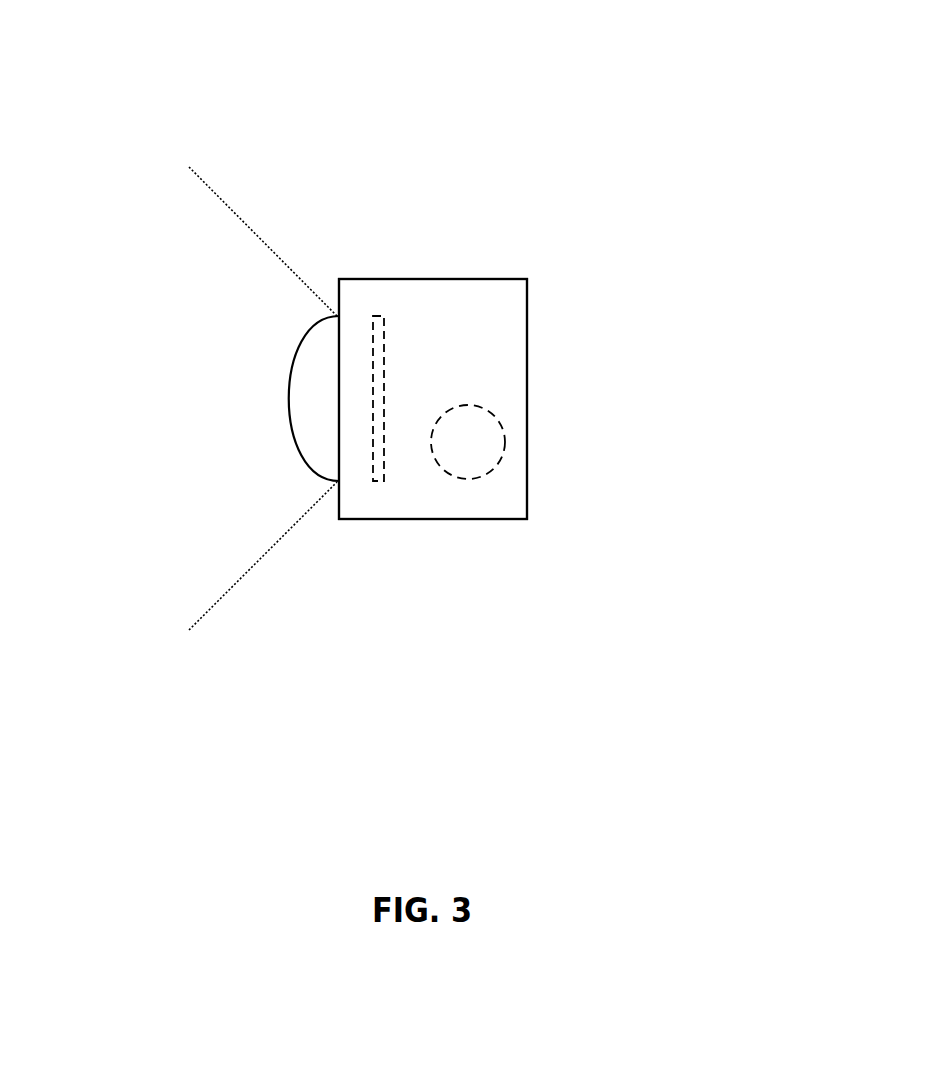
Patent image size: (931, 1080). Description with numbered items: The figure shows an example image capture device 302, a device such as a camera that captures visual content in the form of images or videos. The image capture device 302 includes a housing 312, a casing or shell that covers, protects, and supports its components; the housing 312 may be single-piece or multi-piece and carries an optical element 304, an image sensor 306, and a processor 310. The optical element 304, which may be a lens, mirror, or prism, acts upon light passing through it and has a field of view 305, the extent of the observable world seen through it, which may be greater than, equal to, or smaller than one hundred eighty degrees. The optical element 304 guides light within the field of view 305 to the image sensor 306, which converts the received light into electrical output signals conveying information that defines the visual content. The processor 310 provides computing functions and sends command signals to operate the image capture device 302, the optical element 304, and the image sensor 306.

The image capture device 302 is at (493, 145).
The optical element 304 is at (313, 473).
The field of view 305 is at (258, 547).
The image sensor 306 is at (378, 316).
The processor 310 is at (504, 443).
The housing 312 is at (444, 519).